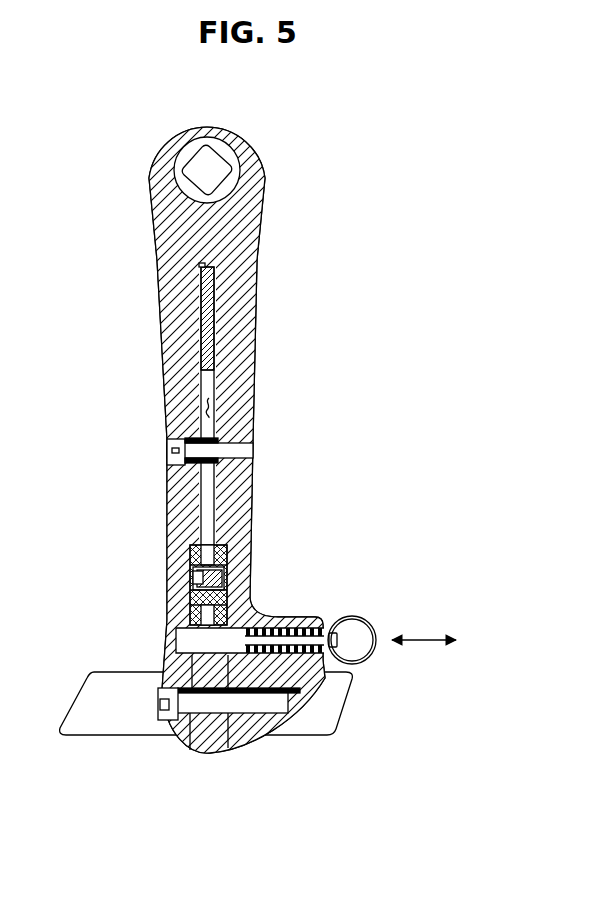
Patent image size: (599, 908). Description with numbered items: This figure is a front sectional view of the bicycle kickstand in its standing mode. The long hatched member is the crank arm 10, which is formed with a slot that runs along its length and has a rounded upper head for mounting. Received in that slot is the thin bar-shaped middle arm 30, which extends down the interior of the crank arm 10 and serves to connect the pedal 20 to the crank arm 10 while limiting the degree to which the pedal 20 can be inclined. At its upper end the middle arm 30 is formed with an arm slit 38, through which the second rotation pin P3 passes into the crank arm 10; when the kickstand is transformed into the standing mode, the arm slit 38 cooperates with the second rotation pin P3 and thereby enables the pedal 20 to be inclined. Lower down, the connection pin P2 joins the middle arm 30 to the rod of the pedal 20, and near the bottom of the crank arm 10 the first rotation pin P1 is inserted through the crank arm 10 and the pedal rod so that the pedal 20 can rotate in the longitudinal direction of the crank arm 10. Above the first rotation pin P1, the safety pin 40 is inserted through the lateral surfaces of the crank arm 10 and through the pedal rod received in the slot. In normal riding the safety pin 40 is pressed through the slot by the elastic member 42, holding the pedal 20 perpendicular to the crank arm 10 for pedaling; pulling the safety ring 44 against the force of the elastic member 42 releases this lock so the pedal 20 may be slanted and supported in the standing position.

The crank arm 10 is at (216, 226).
The pedal 20 is at (348, 712).
The middle arm 30 is at (213, 308).
The arm slit 38 is at (212, 412).
The safety pin 40 is at (333, 606).
The elastic member 42 is at (300, 630).
The safety ring 44 is at (363, 618).
The first rotation pin P1 is at (179, 726).
The connection pin P2 is at (191, 580).
The second rotation pin P3 is at (188, 452).